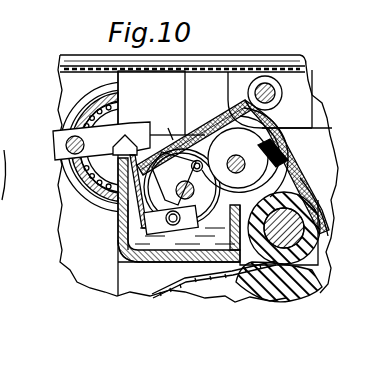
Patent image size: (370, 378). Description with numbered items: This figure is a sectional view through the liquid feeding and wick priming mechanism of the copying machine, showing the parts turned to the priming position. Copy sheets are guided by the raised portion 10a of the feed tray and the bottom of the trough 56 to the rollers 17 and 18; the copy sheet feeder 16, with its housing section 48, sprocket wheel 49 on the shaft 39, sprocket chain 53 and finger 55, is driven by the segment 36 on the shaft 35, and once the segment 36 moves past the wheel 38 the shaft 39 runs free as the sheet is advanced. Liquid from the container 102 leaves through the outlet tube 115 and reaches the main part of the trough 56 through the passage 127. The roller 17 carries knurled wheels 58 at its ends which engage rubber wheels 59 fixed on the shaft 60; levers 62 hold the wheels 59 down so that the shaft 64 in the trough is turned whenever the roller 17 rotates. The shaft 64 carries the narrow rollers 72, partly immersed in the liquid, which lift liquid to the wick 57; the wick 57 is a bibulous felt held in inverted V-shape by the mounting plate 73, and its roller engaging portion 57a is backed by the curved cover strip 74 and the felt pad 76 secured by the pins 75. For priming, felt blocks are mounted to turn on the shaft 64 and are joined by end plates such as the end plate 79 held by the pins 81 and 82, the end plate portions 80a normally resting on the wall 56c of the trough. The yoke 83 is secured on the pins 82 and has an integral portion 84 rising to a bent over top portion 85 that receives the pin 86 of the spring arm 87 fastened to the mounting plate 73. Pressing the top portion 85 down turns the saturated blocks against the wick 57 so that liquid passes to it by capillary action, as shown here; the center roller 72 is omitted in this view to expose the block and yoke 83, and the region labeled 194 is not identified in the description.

The raised portion of the feed tray 10a is at (160, 292).
The outlet tube 115 is at (168, 104).
The copy sheet feeder 16 is at (53, 98).
The housing section 48 is at (62, 197).
The sprocket wheel 49 is at (60, 173).
The sprocket chain 53 is at (62, 183).
The finger 55 is at (114, 153).
The shaft 39 is at (66, 142).
The integral portion of the yoke 84 is at (127, 207).
The passage 127 is at (127, 230).
The trough 56 is at (127, 256).
The lower chamber 194 is at (160, 285).
The pin 86 is at (125, 145).
The yoke 83 is at (147, 191).
The end plate 79 is at (183, 187).
The narrow rollers 72 is at (174, 178).
The shaft 64 is at (195, 190).
The pin 81 is at (201, 170).
The pin 82 is at (180, 219).
The segment 36 is at (310, 88).
The shaft 35 is at (255, 91).
The container 102 is at (256, 67).
The shaft 60 is at (236, 156).
The portion of the end plate 80a is at (233, 187).
The rubber wheels 59 is at (283, 143).
The levers 62 is at (295, 157).
The mounting plate 73 is at (305, 129).
The pins 75 is at (302, 171).
The wick 57 is at (214, 122).
The spring arm 87 is at (188, 132).
The bent over top portion 85 is at (165, 127).
The felt pad 76 is at (310, 186).
The roller engaging portion of the wick 57a is at (322, 223).
The curved cover strip 74 is at (312, 203).
The roller 17 is at (305, 241).
The roller 18 is at (318, 290).
The wall of the trough 56c is at (222, 260).
The knurled wheels 58 is at (6, 219).
The wheel 38 is at (363, 109).